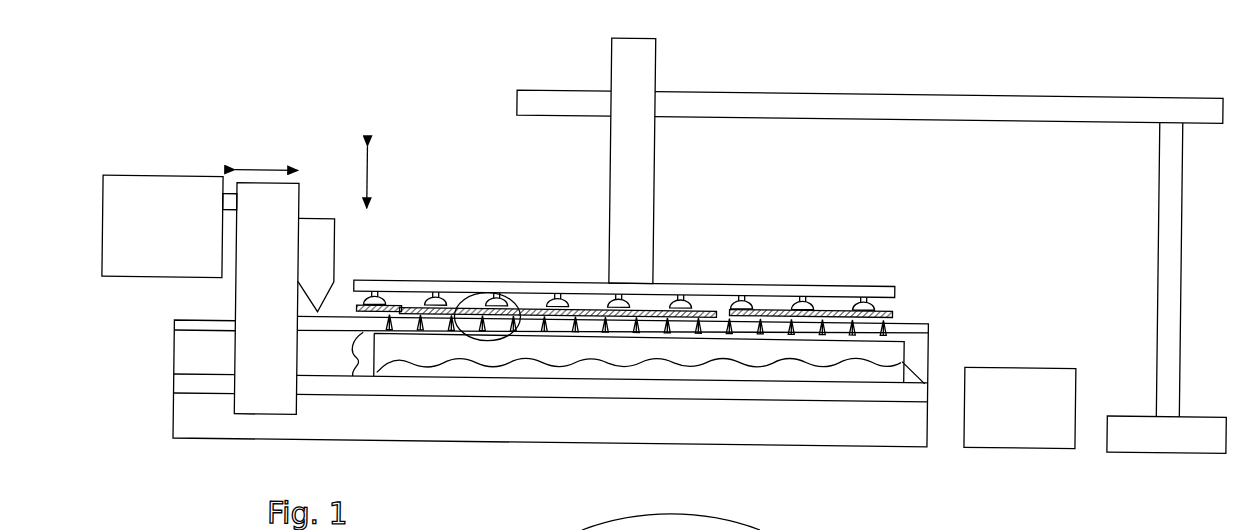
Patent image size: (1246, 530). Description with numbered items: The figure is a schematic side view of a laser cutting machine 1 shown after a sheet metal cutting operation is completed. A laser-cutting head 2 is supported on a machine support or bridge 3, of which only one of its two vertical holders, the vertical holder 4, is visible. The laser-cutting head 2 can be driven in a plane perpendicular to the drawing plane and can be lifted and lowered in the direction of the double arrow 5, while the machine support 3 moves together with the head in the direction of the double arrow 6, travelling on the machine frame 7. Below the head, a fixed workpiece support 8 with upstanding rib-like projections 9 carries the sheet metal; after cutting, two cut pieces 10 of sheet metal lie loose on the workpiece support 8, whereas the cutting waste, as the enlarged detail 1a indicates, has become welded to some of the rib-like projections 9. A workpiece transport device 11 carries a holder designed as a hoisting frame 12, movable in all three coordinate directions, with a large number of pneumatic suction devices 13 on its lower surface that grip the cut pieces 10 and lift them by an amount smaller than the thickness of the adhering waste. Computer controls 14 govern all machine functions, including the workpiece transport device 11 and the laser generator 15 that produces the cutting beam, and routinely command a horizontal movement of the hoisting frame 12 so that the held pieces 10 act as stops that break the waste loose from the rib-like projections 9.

The laser cutting machine 1 is at (196, 109).
The detail region 1a is at (512, 330).
The laser-cutting head 2 is at (310, 263).
The machine support or bridge 3 is at (216, 291).
The vertical holder 4 is at (251, 283).
The double arrow 5 is at (364, 176).
The double arrow 6 is at (265, 168).
The machine frame 7 is at (219, 417).
The workpiece support 8 is at (905, 337).
The rib-like projections 9 is at (927, 315).
The pieces of sheet metal 10 is at (370, 307).
The workpiece transport device 11 is at (590, 73).
The hoisting frame 12 is at (705, 286).
The pneumatic suction devices 13 is at (801, 303).
The computer controls 14 is at (1000, 414).
The laser generator 15 is at (140, 246).